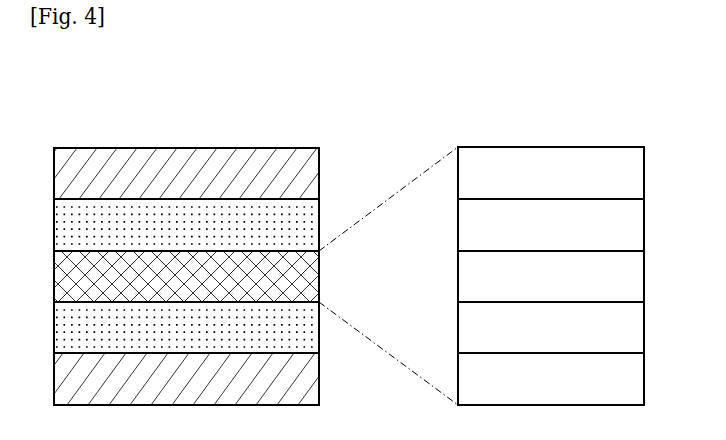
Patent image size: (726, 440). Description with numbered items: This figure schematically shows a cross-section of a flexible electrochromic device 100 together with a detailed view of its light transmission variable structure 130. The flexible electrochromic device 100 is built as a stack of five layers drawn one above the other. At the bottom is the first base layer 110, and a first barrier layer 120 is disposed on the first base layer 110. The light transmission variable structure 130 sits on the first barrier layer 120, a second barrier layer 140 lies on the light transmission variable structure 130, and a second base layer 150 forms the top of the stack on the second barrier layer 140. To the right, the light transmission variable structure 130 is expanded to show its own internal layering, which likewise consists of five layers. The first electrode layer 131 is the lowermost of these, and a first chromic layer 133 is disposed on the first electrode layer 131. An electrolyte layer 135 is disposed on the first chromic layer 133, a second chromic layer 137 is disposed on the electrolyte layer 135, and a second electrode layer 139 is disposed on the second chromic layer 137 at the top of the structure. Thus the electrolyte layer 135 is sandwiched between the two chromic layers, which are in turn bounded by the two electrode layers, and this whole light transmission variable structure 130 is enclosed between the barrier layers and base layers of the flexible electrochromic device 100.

The flexible electrochromic device 100 is at (371, 102).
The first base layer 110 is at (186, 379).
The first barrier layer 120 is at (186, 327).
The light transmission variable structure 130 is at (186, 276).
The first electrode layer 131 is at (551, 379).
The first chromic layer 133 is at (551, 327).
The electrolyte layer 135 is at (551, 276).
The second chromic layer 137 is at (551, 225).
The second electrode layer 139 is at (551, 173).
The second barrier layer 140 is at (186, 225).
The second base layer 150 is at (186, 173).